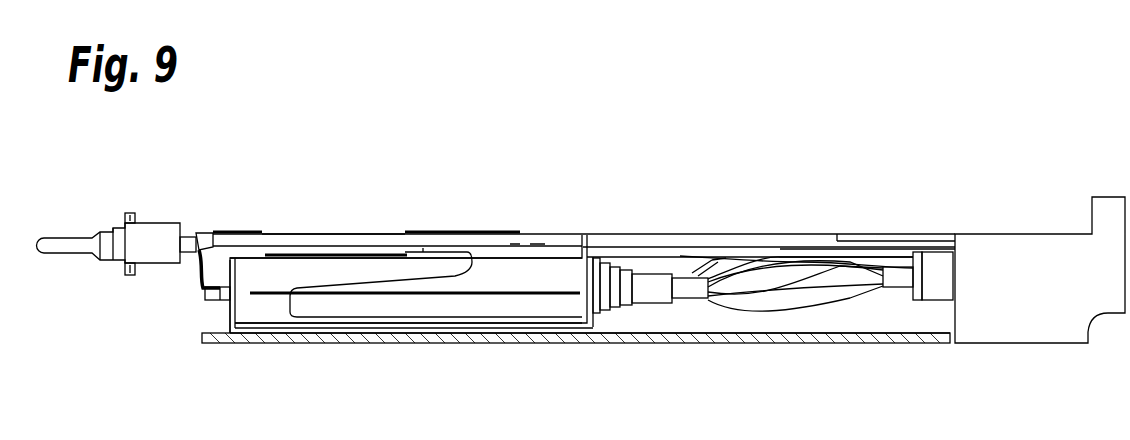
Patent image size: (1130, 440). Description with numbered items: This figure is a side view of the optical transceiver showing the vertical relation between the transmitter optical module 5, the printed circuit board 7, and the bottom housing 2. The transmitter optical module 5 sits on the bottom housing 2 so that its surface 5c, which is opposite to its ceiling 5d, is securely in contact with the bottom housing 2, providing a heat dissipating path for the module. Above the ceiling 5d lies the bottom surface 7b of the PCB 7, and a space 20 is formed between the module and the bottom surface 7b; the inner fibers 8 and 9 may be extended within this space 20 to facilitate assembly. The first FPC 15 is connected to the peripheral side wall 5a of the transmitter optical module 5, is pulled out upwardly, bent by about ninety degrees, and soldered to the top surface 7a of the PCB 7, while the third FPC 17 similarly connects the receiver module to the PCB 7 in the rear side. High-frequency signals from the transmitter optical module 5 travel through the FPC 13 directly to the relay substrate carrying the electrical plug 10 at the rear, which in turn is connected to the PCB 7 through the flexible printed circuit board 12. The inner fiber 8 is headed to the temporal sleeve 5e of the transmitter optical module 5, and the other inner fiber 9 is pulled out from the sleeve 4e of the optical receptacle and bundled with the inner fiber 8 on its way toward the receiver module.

The electrical plug 10 is at (150, 243).
The flexible printed circuit board 12 is at (207, 233).
The ceiling 5d is at (257, 256).
The printed circuit board 7 is at (291, 242).
The top surface of the PCB 7a is at (345, 234).
The space 20 is at (383, 252).
The third FPC 17 is at (450, 231).
The transmitter optical module 5 is at (585, 262).
The inner fiber 9 is at (640, 255).
The bottom surface of the PCB 7b is at (194, 263).
The FPC 13 is at (200, 304).
The peripheral side wall 5a is at (251, 312).
The surface opposite the ceiling 5c is at (270, 334).
The first FPC 15 is at (392, 310).
The bottom housing 2 is at (497, 338).
The temporal sleeve 5e is at (655, 298).
The inner fiber 8 is at (744, 292).
The sleeve 4e is at (935, 290).